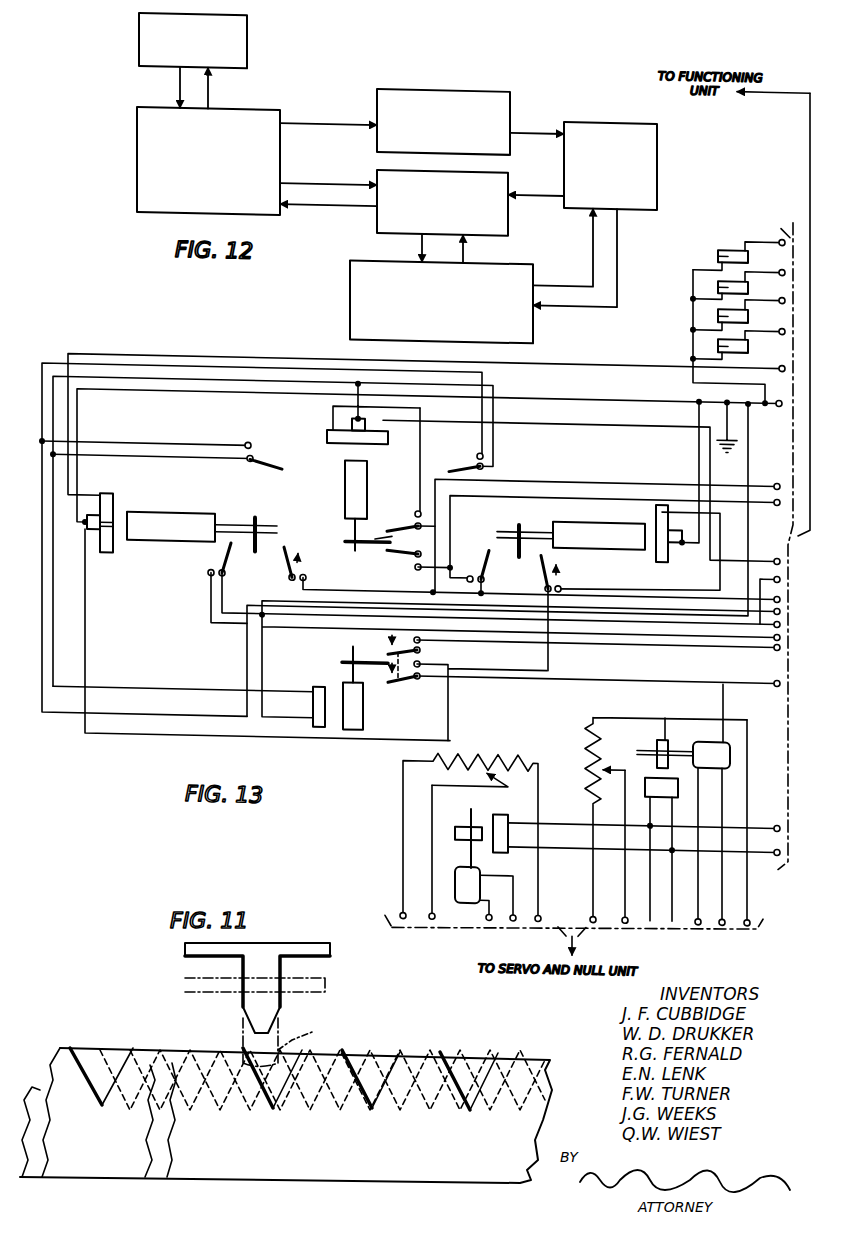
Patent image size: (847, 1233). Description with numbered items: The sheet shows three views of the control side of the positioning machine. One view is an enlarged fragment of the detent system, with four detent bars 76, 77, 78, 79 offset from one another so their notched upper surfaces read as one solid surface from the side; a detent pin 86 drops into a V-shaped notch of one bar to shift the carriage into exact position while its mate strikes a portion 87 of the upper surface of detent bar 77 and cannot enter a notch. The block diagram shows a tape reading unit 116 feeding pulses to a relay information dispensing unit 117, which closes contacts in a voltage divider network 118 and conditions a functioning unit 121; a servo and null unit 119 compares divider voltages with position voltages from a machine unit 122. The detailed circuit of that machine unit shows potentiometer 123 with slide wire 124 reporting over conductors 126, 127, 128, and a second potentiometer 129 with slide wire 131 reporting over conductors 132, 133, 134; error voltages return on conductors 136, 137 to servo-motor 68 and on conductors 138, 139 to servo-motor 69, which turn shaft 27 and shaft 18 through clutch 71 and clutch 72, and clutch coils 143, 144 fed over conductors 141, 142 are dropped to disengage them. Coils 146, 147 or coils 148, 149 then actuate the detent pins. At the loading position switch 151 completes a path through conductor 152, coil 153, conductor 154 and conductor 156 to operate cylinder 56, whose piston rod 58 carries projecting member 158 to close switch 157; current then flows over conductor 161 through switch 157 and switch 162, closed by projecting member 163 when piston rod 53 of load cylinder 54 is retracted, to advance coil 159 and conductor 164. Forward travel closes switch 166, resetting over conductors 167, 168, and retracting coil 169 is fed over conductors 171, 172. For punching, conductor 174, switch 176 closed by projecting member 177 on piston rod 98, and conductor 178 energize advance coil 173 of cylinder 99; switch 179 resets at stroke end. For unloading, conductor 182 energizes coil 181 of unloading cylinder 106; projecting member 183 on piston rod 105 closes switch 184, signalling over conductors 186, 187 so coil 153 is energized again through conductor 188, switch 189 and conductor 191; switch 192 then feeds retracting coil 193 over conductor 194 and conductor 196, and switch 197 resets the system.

In FIG. 12, the tape reading unit 116 is at (240, 48).
In FIG. 12, the relay information dispensing unit 117 is at (266, 110).
In FIG. 12, the voltage divider network 118 is at (492, 82).
In FIG. 12, the servo and null unit 119 is at (600, 117).
In FIG. 12, the functioning unit 121 is at (386, 219).
In FIG. 12, the machine unit 122 is at (350, 309).
In FIG. 13, the machine unit 122 is at (352, 793).
In FIG. 13, the coil 148 is at (718, 247).
In FIG. 13, the coil 146 is at (718, 281).
In FIG. 13, the coil 147 is at (718, 310).
In FIG. 13, the coil 149 is at (718, 340).
In FIG. 13, the conductor 182 is at (213, 361).
In FIG. 13, the conductor 164 is at (605, 366).
In FIG. 13, the conductor 156 is at (155, 371).
In FIG. 13, the conductor 188 is at (108, 449).
In FIG. 13, the conductor 191 is at (171, 447).
In FIG. 13, the switch 189 is at (276, 455).
In FIG. 13, the advance coil 173 is at (327, 437).
In FIG. 13, the conductor 178 is at (420, 470).
In FIG. 13, the switch 151 is at (456, 461).
In FIG. 13, the cylinder 99 is at (345, 468).
In FIG. 13, the piston rod 98 is at (345, 543).
In FIG. 13, the switch 176 is at (396, 519).
In FIG. 13, the switch 179 is at (410, 556).
In FIG. 13, the projecting member 177 is at (378, 548).
In FIG. 13, the conductor 186 is at (394, 565).
In FIG. 13, the switch 184 is at (307, 574).
In FIG. 13, the projecting member 183 is at (256, 553).
In FIG. 13, the switch 197 is at (213, 562).
In FIG. 13, the coil 181 is at (118, 511).
In FIG. 13, the retracting coil 193 is at (113, 556).
In FIG. 13, the unloading cylinder 106 is at (195, 518).
In FIG. 13, the piston rod 105 is at (258, 522).
In FIG. 13, the conductor 196 is at (86, 650).
In FIG. 13, the conductor 154 is at (216, 694).
In FIG. 13, the conductor 152 is at (262, 645).
In FIG. 13, the conductor 187 is at (654, 632).
In FIG. 13, the conductor 167 is at (592, 641).
In FIG. 13, the conductor 194 is at (678, 619).
In FIG. 13, the servo-motor 68 is at (724, 686).
In FIG. 13, the conductor 161 is at (536, 678).
In FIG. 13, the switch 192 is at (417, 650).
In FIG. 13, the piston rod 58 is at (340, 661).
In FIG. 13, the projecting member 158 is at (372, 660).
In FIG. 13, the switch 157 is at (398, 690).
In FIG. 13, the cylinder 56 is at (343, 690).
In FIG. 13, the coil 153 is at (313, 708).
In FIG. 13, the conductor 168 is at (530, 480).
In FIG. 13, the conductor 174 is at (575, 494).
In FIG. 13, the advance coil 159 is at (660, 500).
In FIG. 13, the conductor 172 is at (672, 560).
In FIG. 13, the conductor 171 is at (684, 537).
In FIG. 13, the retracting coil 169 is at (658, 557).
In FIG. 13, the load cylinder 54 is at (588, 524).
In FIG. 13, the piston rod 53 is at (522, 526).
In FIG. 13, the switch 166 is at (477, 558).
In FIG. 13, the projecting member 163 is at (488, 560).
In FIG. 13, the switch 162 is at (566, 572).
In FIG. 13, the potentiometer 123 is at (460, 751).
In FIG. 13, the slide wire 124 is at (475, 846).
In FIG. 13, the clutch 72 is at (462, 822).
In FIG. 13, the shaft 18 is at (485, 826).
In FIG. 13, the clutch coil 144 is at (509, 837).
In FIG. 13, the servo-motor 69 is at (458, 876).
In FIG. 13, the second potentiometer 129 is at (590, 750).
In FIG. 13, the slide wire 131 is at (618, 766).
In FIG. 13, the conductor 132 is at (592, 808).
In FIG. 13, the clutch 71 is at (665, 714).
In FIG. 13, the shaft 27 is at (655, 746).
In FIG. 13, the conductor 134 is at (731, 738).
In FIG. 13, the clutch coil 143 is at (664, 773).
In FIG. 13, the conductor 126 is at (403, 855).
In FIG. 13, the conductor 127 is at (432, 881).
In FIG. 13, the conductor 128 is at (539, 871).
In FIG. 13, the conductor 138 is at (513, 888).
In FIG. 13, the conductor 139 is at (489, 909).
In FIG. 13, the conductor 141 is at (662, 850).
In FIG. 13, the conductor 142 is at (672, 872).
In FIG. 13, the conductor 137 is at (698, 893).
In FIG. 13, the conductor 136 is at (720, 905).
In FIG. 13, the conductor 133 is at (625, 920).
In FIG. 11, the detent pin 86 is at (270, 1008).
In FIG. 11, the portion of upper surface 87 is at (286, 1046).
In FIG. 11, the detent bar 76 is at (226, 1168).
In FIG. 11, the detent bar 77 is at (158, 1170).
In FIG. 11, the detent bar 78 is at (100, 1168).
In FIG. 11, the detent bar 79 is at (22, 1178).